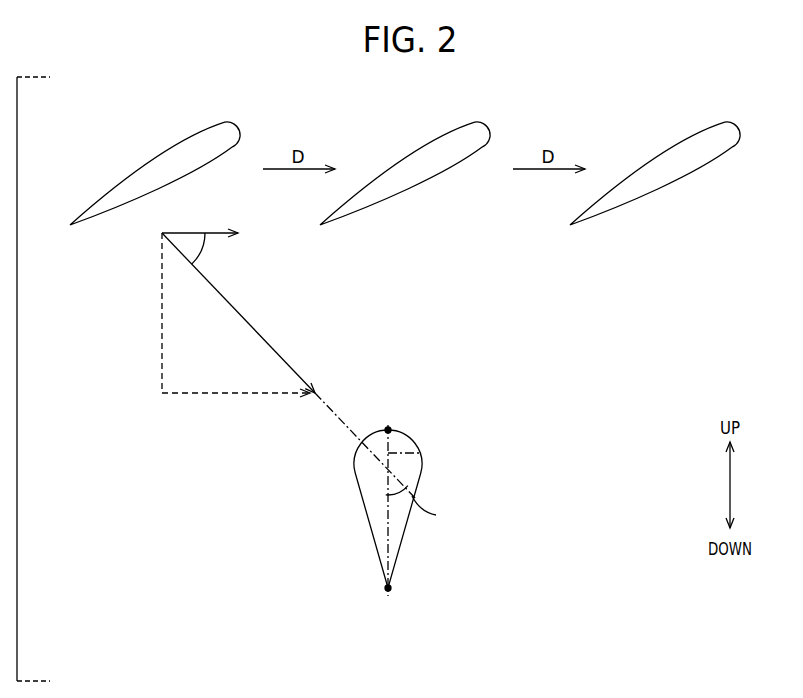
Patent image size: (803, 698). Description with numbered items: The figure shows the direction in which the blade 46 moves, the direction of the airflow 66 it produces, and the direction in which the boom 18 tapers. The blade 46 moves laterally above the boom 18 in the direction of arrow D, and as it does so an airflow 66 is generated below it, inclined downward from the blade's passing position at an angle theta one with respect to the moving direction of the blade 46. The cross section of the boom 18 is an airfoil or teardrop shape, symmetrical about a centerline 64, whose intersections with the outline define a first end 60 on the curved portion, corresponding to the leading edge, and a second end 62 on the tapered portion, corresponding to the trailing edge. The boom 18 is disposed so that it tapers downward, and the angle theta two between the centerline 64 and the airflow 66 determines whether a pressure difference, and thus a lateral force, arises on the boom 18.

The blade 46 is at (190, 135).
The airflow 66 is at (247, 318).
The boom 18 is at (366, 518).
The first end 60 is at (389, 428).
The second end 62 is at (388, 597).
The centerline 64 is at (424, 449).